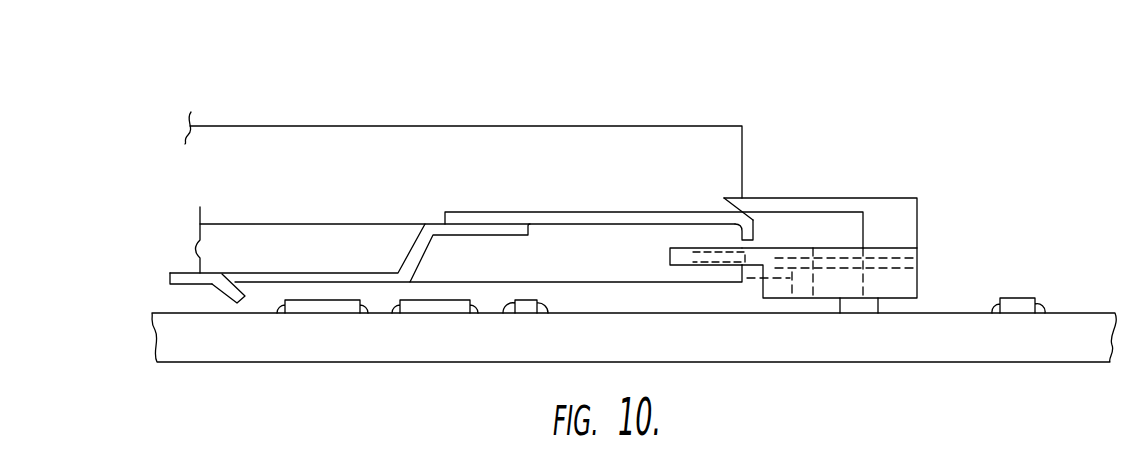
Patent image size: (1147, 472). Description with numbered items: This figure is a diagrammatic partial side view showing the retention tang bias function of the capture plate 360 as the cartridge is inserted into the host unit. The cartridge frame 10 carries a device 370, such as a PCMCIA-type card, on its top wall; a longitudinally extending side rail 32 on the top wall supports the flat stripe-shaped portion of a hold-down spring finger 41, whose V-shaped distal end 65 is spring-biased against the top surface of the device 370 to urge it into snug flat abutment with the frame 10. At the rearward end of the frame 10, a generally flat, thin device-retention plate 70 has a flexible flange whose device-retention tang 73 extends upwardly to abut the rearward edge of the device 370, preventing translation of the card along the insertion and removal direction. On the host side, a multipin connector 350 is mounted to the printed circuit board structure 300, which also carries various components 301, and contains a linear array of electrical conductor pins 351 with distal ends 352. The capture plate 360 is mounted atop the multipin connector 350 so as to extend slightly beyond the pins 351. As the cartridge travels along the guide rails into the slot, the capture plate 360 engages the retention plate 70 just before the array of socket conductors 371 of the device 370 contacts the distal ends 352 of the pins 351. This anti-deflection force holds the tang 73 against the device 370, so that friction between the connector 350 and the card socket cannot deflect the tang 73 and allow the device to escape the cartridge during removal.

The frame 10 is at (743, 126).
The side rail 32 is at (264, 228).
The hold-down spring finger 41 is at (350, 279).
The V-shaped distal end 65 is at (233, 305).
The device-retention plate 70 is at (607, 212).
The device-retention tang 73 is at (753, 221).
The printed circuit board structure 300 is at (822, 357).
The components 301 is at (310, 314).
The multipin connector 350 is at (918, 277).
The electrical conductor pins 351 is at (917, 257).
The distal ends 352 is at (776, 262).
The capture plate 360 is at (917, 207).
The device 370 is at (552, 237).
The socket conductors 371 is at (697, 253).